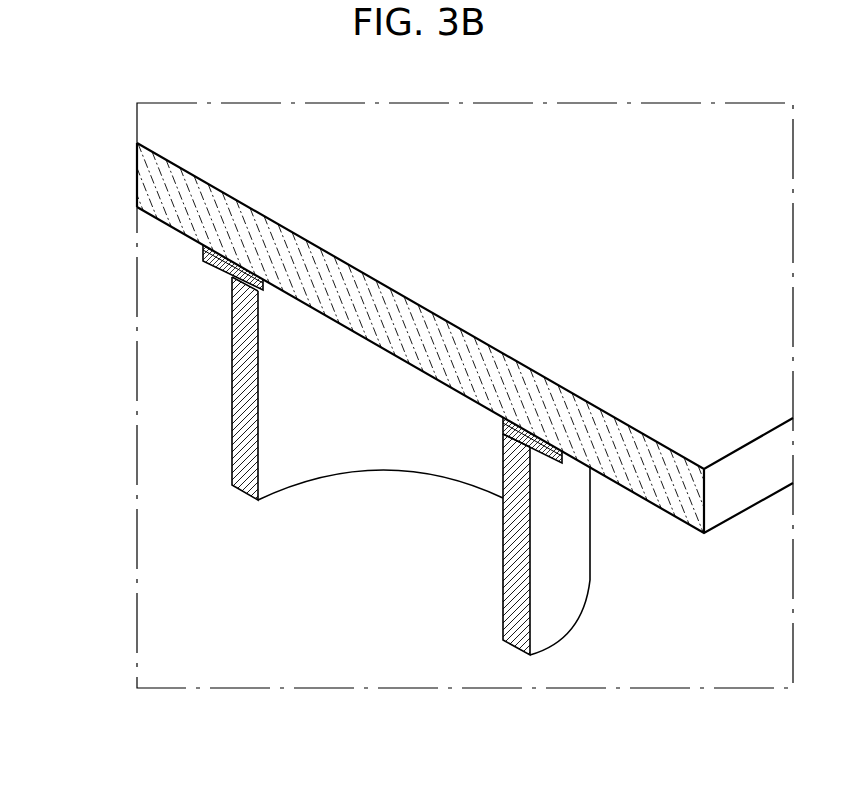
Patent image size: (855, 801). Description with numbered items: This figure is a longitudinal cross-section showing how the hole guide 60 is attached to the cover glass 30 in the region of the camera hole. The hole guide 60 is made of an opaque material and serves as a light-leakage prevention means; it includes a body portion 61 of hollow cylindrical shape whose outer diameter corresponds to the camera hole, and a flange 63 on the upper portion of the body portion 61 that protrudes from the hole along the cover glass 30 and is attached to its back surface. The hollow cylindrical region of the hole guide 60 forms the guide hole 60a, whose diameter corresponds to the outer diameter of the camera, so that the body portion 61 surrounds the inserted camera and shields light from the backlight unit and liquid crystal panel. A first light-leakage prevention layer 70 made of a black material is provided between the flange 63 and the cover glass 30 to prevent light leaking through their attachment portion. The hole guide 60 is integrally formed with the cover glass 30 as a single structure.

The cover glass 30 is at (690, 505).
The hole guide 60 is at (308, 465).
The guide hole 60a is at (282, 438).
The body portion 61 is at (240, 397).
The flange 63 is at (218, 266).
The first light-leakage prevention layer 70 is at (212, 254).